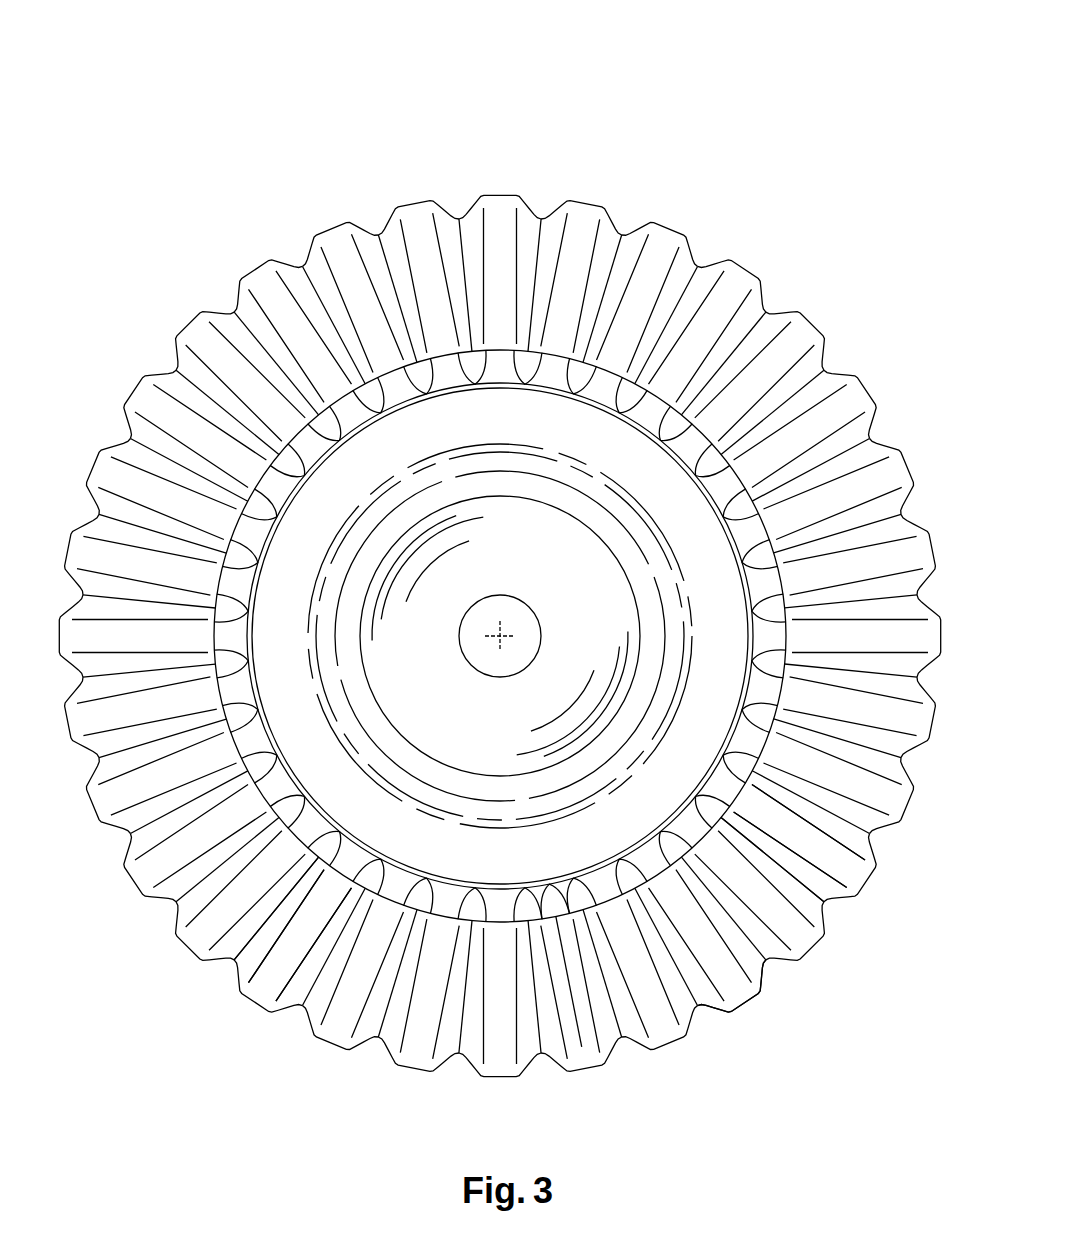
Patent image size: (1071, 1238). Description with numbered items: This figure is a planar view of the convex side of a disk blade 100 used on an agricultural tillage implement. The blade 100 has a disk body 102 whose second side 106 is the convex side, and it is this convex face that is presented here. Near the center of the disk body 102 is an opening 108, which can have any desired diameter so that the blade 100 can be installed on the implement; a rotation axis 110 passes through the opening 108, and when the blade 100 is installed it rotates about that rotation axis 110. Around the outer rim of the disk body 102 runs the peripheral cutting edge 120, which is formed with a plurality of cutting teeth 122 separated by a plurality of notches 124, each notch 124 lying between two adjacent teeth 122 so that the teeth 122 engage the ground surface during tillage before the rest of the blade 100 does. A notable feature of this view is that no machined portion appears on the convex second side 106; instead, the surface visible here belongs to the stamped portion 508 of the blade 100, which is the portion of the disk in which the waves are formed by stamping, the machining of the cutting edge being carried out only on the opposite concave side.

The blade 100 is at (320, 147).
The disk body 102 is at (584, 436).
The second side 106 is at (723, 1030).
The opening 108 is at (489, 652).
The rotation axis 110 is at (505, 633).
The peripheral cutting edge 120 is at (250, 263).
The cutting teeth 122 is at (865, 887).
The notches 124 is at (855, 928).
The stamped portion 508 is at (578, 1033).